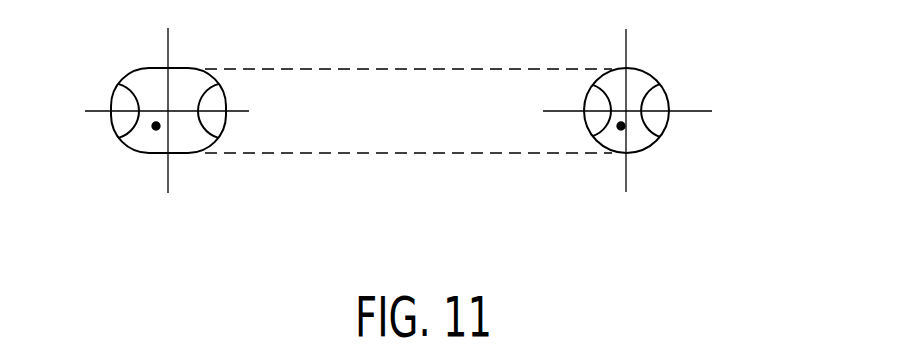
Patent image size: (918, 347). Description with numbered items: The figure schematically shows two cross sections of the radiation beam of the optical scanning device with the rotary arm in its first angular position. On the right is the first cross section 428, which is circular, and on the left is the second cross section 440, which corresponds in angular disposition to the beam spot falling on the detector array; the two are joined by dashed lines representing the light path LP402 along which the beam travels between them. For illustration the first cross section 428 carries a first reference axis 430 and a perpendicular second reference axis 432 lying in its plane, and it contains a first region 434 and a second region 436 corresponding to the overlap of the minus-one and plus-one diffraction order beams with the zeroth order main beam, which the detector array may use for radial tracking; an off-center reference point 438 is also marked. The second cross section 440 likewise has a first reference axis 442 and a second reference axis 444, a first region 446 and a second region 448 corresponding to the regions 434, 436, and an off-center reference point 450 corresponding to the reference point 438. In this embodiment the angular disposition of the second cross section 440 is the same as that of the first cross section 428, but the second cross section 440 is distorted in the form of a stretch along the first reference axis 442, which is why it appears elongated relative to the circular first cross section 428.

The first cross section 428 is at (633, 82).
The first reference axis 430 is at (692, 115).
The second reference axis 432 is at (623, 168).
The first region 434 is at (568, 113).
The second region 436 is at (657, 100).
The off-center reference point 438 is at (623, 132).
The second cross section 440 is at (190, 82).
The first reference axis 442 is at (102, 115).
The second reference axis 444 is at (167, 173).
The first region 446 is at (127, 102).
The second region 448 is at (213, 122).
The off-center reference point 450 is at (153, 130).
The light path LP402 is at (398, 155).